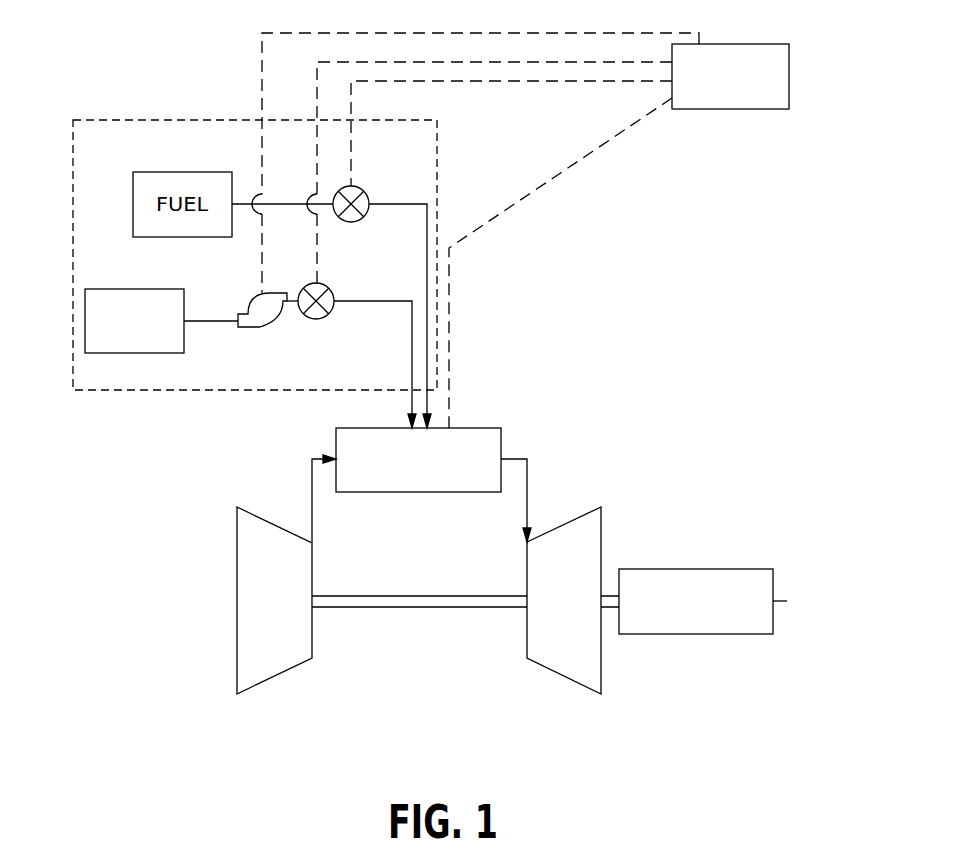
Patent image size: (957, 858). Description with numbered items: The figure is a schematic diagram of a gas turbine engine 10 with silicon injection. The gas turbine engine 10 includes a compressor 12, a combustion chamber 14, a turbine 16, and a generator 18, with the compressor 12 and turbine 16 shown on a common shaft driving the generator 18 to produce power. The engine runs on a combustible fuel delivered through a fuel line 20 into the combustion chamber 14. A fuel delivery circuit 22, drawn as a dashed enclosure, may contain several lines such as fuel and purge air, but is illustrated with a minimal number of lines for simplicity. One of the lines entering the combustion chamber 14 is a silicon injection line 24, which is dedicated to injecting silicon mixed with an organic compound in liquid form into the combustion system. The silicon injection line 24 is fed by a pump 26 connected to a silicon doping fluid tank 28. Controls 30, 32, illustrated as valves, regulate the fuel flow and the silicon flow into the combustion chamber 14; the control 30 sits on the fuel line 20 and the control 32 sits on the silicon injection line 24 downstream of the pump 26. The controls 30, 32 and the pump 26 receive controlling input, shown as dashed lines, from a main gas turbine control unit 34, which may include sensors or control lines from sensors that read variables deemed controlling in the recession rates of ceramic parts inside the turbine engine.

The gas turbine engine 10 is at (576, 306).
The compressor 12 is at (237, 587).
The combustion chamber 14 is at (483, 428).
The turbine 16 is at (553, 672).
The generator 18 is at (685, 569).
The fuel line 20 is at (283, 204).
The fuel delivery circuit 22 is at (73, 120).
The silicon injection line 24 is at (380, 301).
The pump 26 is at (260, 319).
The silicon doping fluid tank 28 is at (107, 353).
The control 30 is at (358, 189).
The control 32 is at (324, 286).
The main gas turbine control unit 34 is at (738, 109).